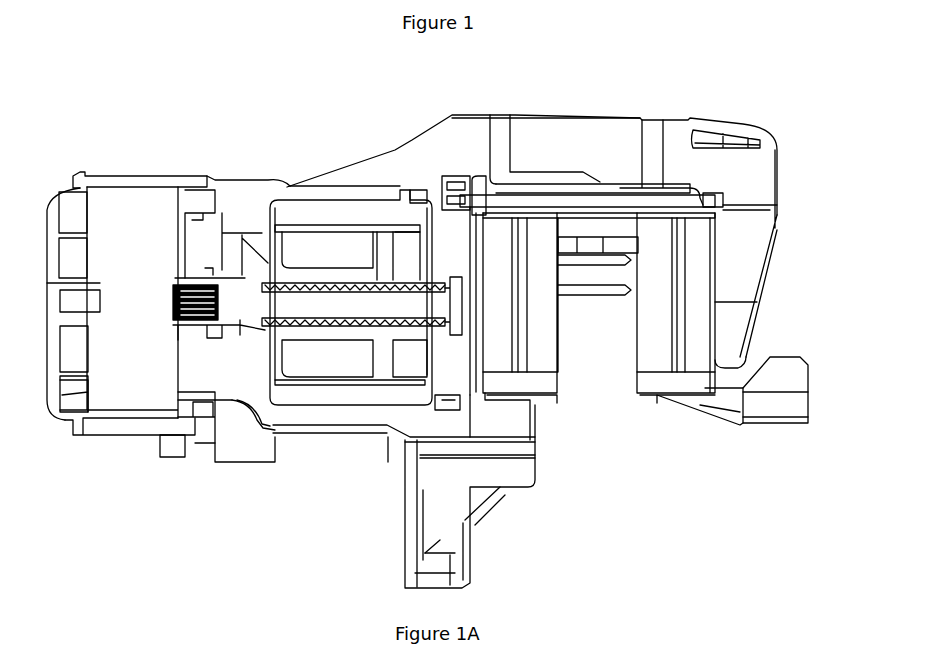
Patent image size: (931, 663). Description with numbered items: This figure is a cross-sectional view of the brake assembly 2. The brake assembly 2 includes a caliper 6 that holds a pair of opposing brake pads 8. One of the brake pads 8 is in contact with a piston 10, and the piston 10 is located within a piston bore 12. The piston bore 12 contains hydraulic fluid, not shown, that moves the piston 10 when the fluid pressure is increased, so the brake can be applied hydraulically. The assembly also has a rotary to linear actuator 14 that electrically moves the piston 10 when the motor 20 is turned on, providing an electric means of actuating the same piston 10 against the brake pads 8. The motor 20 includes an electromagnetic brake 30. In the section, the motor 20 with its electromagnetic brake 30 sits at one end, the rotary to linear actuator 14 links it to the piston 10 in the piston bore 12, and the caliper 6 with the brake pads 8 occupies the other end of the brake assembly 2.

The brake assembly 2 is at (780, 104).
The caliper 6 is at (558, 122).
The brake pads 8 is at (660, 345).
The piston 10 is at (400, 205).
The piston bore 12 is at (318, 190).
The rotary to linear actuator 14 is at (222, 222).
The motor 20 is at (52, 138).
The electromagnetic brake 30 is at (78, 388).